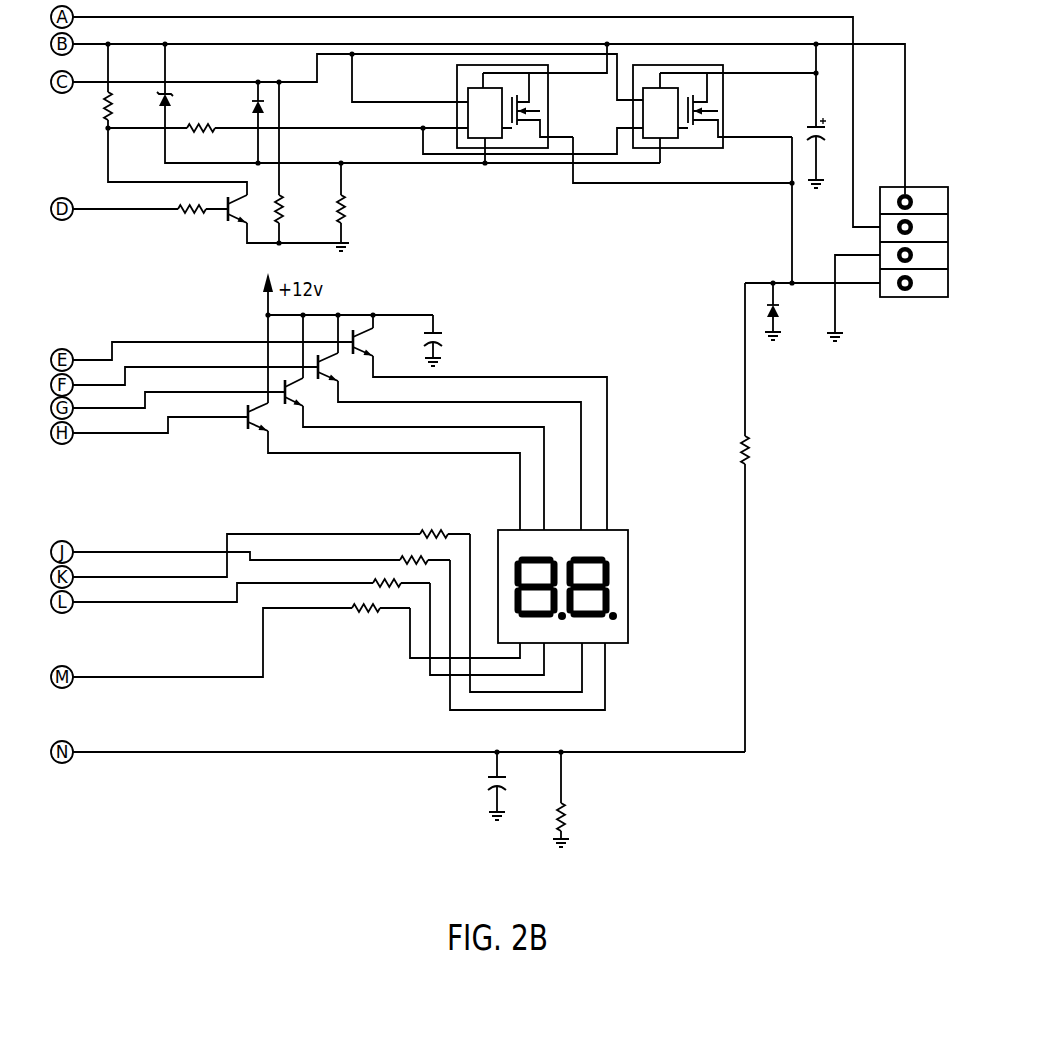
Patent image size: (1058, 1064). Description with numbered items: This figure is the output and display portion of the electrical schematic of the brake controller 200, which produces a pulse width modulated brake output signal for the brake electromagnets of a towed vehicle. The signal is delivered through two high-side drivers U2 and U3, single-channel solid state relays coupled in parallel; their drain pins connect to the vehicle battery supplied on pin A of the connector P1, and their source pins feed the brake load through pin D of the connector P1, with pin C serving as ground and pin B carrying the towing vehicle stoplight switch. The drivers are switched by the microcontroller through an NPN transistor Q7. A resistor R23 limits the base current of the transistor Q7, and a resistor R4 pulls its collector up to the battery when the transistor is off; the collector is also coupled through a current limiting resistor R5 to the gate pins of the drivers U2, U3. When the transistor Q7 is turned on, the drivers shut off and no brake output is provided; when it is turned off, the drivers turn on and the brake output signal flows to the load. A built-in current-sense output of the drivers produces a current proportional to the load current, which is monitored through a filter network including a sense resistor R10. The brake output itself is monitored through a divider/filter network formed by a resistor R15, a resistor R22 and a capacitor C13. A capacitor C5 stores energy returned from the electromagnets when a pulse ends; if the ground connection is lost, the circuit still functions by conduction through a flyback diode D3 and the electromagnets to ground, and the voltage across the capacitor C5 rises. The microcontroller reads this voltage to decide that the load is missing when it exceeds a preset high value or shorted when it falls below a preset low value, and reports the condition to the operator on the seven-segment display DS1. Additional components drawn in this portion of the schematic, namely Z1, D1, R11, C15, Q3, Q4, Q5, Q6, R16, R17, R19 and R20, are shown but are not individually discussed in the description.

The brake controller 200 is at (240, 914).
The resistor R4 is at (95, 106).
The zener diode Z1 is at (155, 99).
The diode D1 is at (246, 107).
The current limiting resistor R5 is at (201, 141).
The resistor R23 is at (189, 222).
The NPN transistor Q7 is at (247, 209).
The sense resistor R10 is at (295, 209).
The resistor R11 is at (355, 209).
The high-side driver U2 is at (495, 109).
The high-side driver U3 is at (705, 109).
The capacitor C5 is at (825, 118).
The connector P1 is at (914, 226).
The flyback diode D3 is at (789, 310).
The resistor R15 is at (762, 449).
The capacitor C15 is at (449, 337).
The transistor Q3 is at (357, 354).
The transistor Q4 is at (323, 380).
The transistor Q5 is at (288, 405).
The transistor Q6 is at (253, 430).
The display DS1 is at (588, 589).
The resistor R16 is at (415, 545).
The resistor R17 is at (393, 569).
The resistor R19 is at (368, 593).
The resistor R20 is at (346, 618).
The capacitor C13 is at (479, 781).
The resistor R22 is at (579, 817).